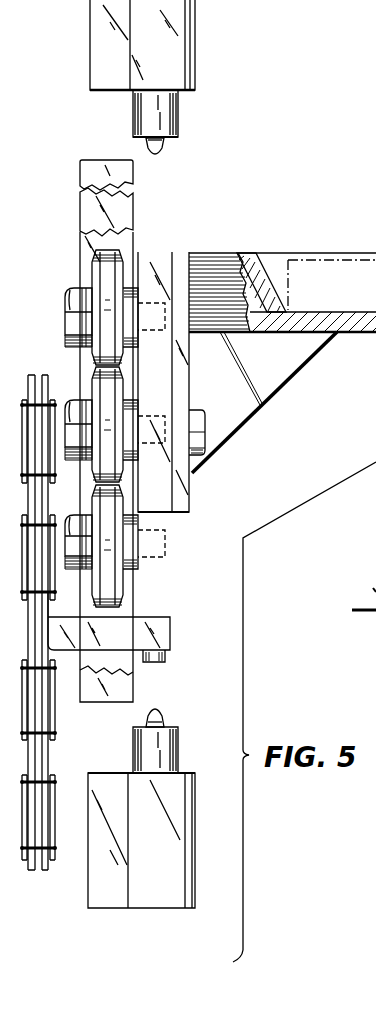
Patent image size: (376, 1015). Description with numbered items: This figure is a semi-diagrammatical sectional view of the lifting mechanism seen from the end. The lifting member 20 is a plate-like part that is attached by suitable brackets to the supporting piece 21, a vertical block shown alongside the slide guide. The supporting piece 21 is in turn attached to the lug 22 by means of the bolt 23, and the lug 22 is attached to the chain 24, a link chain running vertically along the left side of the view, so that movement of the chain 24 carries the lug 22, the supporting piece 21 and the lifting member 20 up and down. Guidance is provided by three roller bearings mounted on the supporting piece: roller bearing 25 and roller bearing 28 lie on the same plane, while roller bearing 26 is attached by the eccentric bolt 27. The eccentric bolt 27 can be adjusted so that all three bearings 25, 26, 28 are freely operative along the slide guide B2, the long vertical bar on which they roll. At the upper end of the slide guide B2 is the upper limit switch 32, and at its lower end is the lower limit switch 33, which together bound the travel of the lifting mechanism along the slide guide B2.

The upper limit switch 32 is at (163, 48).
The slide guide B2 is at (125, 206).
The supporting piece 21 is at (163, 262).
The lifting member 20 is at (282, 253).
The roller bearing 28 is at (105, 276).
The roller bearing 26 is at (108, 406).
The roller bearing 25 is at (110, 526).
The eccentric bolt 27 is at (196, 416).
The chain 24 is at (48, 375).
The lug 22 is at (128, 644).
The bolt 23 is at (162, 663).
The lower limit switch 33 is at (163, 857).